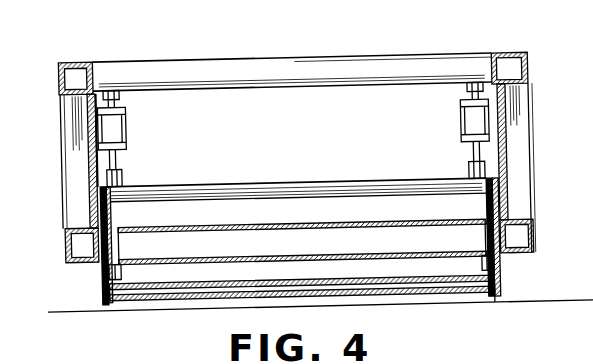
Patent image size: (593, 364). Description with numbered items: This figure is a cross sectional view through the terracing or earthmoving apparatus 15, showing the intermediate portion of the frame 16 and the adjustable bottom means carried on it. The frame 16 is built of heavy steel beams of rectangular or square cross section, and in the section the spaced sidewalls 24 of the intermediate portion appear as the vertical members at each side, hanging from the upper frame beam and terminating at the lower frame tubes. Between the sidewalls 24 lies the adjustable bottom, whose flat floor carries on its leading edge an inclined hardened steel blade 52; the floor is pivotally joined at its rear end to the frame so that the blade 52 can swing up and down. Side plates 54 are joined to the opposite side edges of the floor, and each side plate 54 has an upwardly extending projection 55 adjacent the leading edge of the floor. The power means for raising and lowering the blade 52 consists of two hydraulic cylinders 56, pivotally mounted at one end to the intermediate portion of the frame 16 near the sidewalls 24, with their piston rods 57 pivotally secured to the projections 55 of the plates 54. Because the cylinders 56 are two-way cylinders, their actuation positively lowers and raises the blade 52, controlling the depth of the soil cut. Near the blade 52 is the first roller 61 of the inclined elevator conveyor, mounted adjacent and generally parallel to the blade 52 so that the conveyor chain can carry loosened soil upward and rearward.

The terracing or earthmoving apparatus 15 is at (428, 52).
The frame 16 is at (481, 53).
The sidewalls 24 is at (88, 167).
The inclined hardened steel blade 52 is at (417, 299).
The side plates 54 is at (115, 218).
The upwardly extending projection 55 is at (95, 208).
The hydraulic cylinders 56 is at (131, 128).
The piston rods 57 is at (126, 178).
The first roller 61 is at (107, 278).